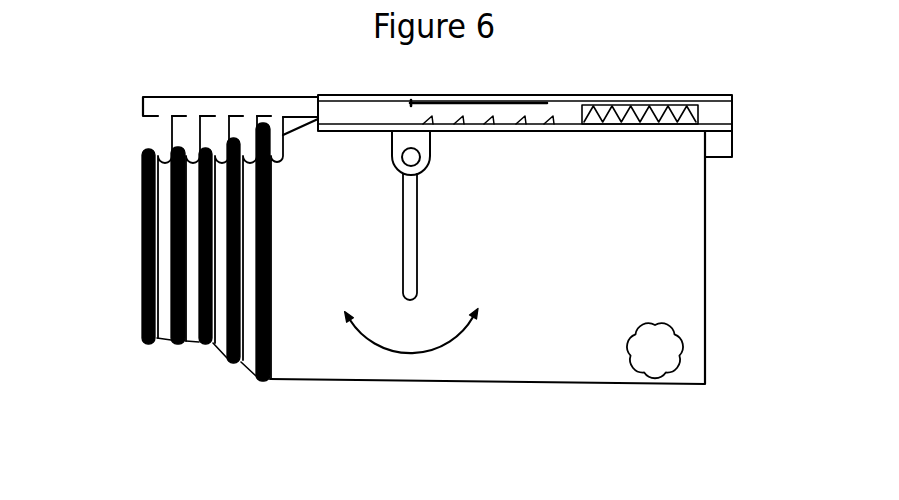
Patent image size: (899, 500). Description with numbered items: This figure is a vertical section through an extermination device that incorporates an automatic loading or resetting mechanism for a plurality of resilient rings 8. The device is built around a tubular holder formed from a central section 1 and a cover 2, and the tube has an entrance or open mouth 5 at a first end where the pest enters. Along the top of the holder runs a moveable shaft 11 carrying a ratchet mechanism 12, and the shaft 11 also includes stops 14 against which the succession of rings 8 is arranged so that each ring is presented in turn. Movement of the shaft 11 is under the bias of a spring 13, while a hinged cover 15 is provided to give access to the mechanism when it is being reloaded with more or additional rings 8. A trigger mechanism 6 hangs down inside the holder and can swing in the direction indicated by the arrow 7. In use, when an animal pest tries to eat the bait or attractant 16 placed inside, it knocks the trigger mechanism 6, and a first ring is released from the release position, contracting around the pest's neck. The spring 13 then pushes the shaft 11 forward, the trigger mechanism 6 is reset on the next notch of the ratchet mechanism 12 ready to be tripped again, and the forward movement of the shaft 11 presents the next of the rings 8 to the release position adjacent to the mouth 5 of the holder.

The central section 1 is at (428, 273).
The cover 2 is at (705, 287).
The open mouth 5 is at (116, 254).
The trigger mechanism 6 is at (410, 275).
The pendulum swing direction 7 is at (421, 347).
The rings 8 is at (253, 375).
The moveable shaft 11 is at (230, 108).
The ratchet mechanism 12 is at (472, 122).
The spring 13 is at (617, 118).
The stops 14 is at (158, 130).
The hinged cover 15 is at (733, 115).
The bait or attractant 16 is at (688, 342).